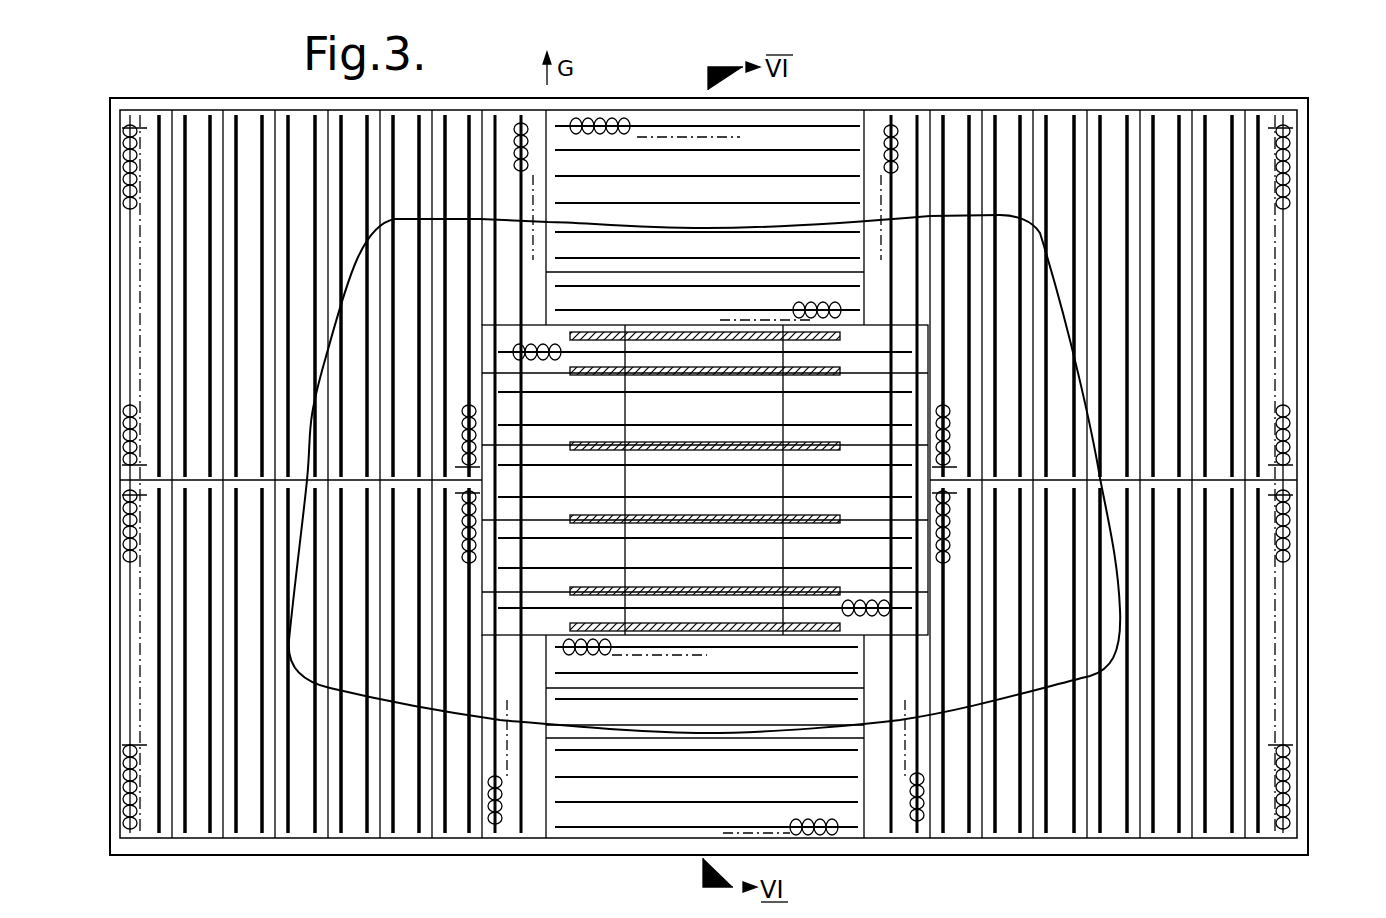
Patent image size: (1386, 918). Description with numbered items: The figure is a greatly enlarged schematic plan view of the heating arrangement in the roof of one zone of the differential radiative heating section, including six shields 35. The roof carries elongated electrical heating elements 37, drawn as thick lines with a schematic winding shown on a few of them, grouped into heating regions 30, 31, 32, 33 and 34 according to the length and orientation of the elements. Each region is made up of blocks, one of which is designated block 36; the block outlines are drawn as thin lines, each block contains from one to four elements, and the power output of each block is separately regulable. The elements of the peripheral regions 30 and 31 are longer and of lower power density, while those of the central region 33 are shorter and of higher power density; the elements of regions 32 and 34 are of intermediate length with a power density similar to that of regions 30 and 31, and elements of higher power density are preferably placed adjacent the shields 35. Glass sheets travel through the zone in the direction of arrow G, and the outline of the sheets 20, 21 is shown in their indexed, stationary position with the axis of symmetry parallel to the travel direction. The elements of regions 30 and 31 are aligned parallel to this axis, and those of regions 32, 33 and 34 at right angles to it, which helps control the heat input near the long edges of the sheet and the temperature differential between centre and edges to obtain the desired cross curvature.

The glass sheet 20 is at (837, 474).
The glass sheet 21 is at (1113, 663).
The peripheral heating region 30 is at (307, 480).
The peripheral heating region 31 is at (1105, 480).
The heating region 32 is at (665, 219).
The central heating region 33 is at (701, 494).
The heating region 34 is at (617, 738).
The shield 35 is at (840, 444).
The block 36 is at (150, 283).
The heating element 37 is at (130, 340).